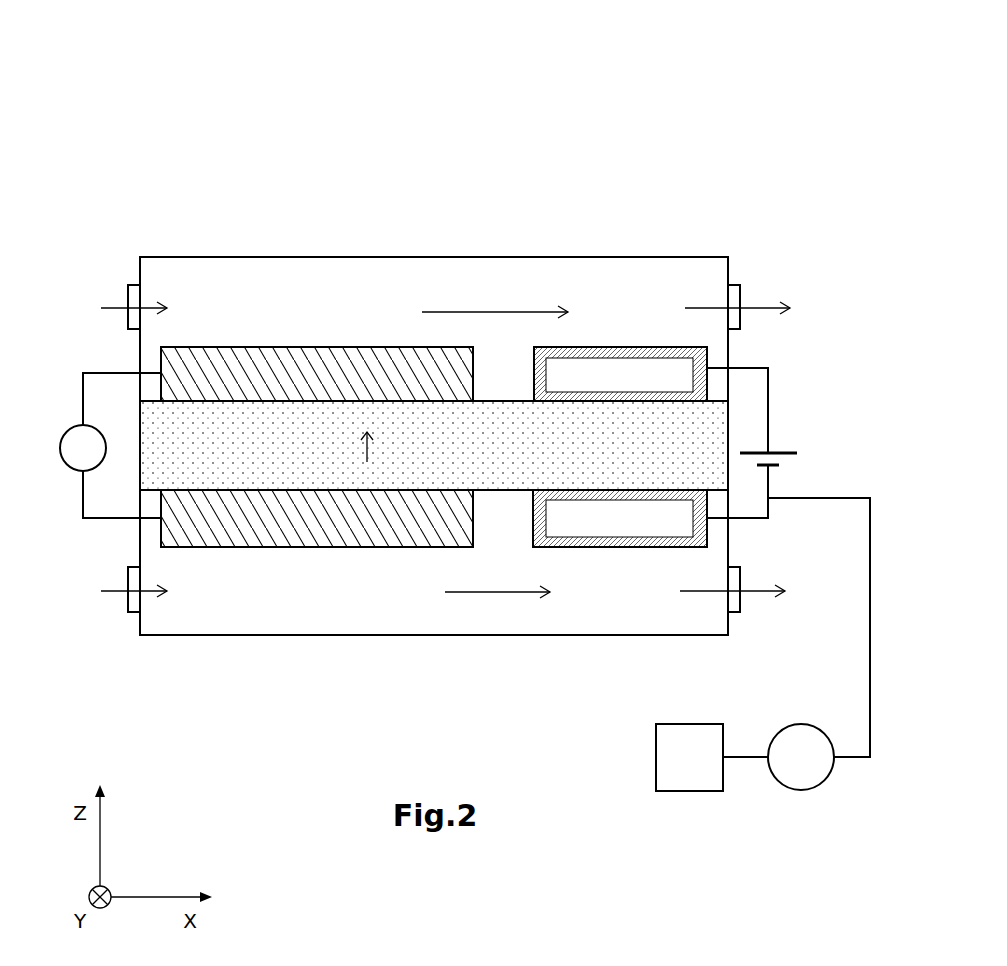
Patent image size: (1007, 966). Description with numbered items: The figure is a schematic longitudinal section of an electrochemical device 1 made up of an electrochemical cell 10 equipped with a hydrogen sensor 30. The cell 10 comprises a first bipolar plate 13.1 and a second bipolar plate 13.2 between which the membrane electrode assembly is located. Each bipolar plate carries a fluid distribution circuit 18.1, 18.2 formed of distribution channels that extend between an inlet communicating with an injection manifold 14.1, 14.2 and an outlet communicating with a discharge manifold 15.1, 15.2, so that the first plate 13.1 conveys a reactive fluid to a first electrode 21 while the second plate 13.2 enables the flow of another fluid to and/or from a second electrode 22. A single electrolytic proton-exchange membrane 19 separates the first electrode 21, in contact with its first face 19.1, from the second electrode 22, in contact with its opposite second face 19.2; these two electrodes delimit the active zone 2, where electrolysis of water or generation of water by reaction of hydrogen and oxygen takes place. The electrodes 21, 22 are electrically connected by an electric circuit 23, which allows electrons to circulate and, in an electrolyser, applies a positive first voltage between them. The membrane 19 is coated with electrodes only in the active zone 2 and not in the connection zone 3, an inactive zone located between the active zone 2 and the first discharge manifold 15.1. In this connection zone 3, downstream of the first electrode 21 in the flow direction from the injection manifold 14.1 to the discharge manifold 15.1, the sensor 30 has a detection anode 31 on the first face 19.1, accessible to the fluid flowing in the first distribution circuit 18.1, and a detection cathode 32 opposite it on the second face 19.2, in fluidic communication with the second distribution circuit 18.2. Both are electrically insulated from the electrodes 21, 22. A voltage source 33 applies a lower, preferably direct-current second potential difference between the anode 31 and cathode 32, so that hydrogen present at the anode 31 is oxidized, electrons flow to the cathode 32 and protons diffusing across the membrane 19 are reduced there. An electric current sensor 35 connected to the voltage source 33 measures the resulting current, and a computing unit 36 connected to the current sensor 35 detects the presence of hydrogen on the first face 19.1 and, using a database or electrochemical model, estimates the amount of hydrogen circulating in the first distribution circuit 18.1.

The electrochemical device 1 is at (108, 90).
The electrochemical cell 10 is at (106, 166).
The first bipolar plate 13.1 is at (210, 257).
The second bipolar plate 13.2 is at (240, 637).
The first injection manifold 14.1 is at (133, 285).
The second injection manifold 14.2 is at (133, 612).
The first discharge manifold 15.1 is at (734, 285).
The second discharge manifold 15.2 is at (735, 612).
The first fluid distribution circuit 18.1 is at (290, 290).
The second fluid distribution circuit 18.2 is at (340, 612).
The electrolytic proton-exchange membrane 19 is at (434, 445).
The first face of the electrolytic membrane 19.1 is at (535, 401).
The second face of the electrolytic membrane 19.2 is at (535, 490).
The active zone 2 is at (356, 283).
The first electrode 21 is at (318, 347).
The second electrode 22 is at (316, 547).
The connection zone 3 is at (623, 281).
The detection anode 31 is at (622, 347).
The detection cathode 32 is at (622, 547).
The electric circuit 23 is at (64, 424).
The voltage source 33 is at (826, 424).
The hydrogen sensor 30 is at (731, 860).
The electric current sensor 35 is at (800, 790).
The computing unit 36 is at (695, 791).